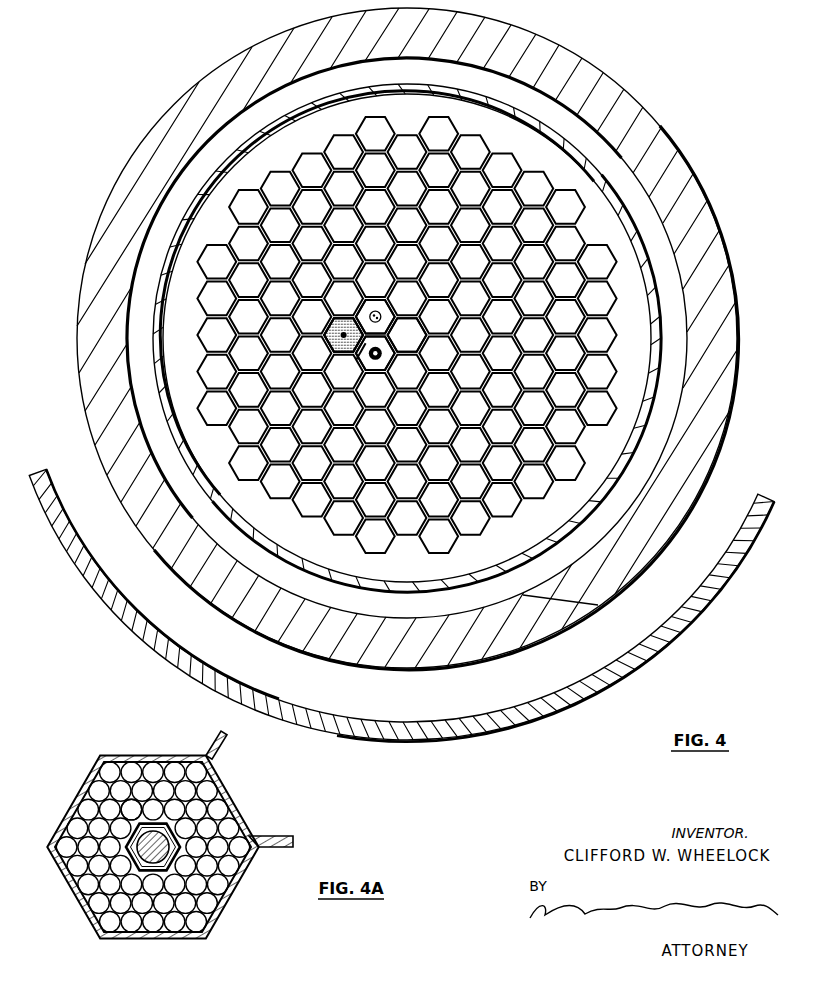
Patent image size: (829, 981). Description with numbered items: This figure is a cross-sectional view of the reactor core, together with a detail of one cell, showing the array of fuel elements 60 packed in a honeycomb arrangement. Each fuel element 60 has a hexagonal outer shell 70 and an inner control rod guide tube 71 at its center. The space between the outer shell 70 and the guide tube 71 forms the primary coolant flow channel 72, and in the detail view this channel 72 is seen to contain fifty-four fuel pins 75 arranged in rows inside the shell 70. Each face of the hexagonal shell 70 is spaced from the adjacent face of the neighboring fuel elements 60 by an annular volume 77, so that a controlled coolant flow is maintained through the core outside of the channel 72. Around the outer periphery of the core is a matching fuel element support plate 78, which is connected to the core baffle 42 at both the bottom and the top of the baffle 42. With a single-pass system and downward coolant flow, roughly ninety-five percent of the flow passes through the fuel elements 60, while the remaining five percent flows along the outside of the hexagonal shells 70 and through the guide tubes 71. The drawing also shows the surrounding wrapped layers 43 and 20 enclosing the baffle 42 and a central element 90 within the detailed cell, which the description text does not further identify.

In FIG. 4, the spirally wound sheet 20 is at (481, 750).
In FIG. 4, the core baffle 42 is at (192, 472).
In FIG. 4, the insulating layer 43 is at (525, 42).
In FIG. 4, the fuel elements 60 is at (406, 335).
In FIG. 4, the hexagonal outer shell 70 is at (407, 335).
In FIG. 4A, the hexagonal outer shell 70 is at (92, 911).
In FIG. 4, the control rod guide tube 71 is at (376, 311).
In FIG. 4A, the control rod guide tube 71 is at (130, 806).
In FIG. 4, the primary coolant flow channel 72 is at (375, 368).
In FIG. 4, the fuel pins 75 is at (333, 344).
In FIG. 4A, the fuel pins 75 is at (210, 790).
In FIG. 4, the annular volume 77 is at (365, 362).
In FIG. 4A, the annular volume 77 is at (215, 752).
In FIG. 4, the fuel element support plate 78 is at (358, 351).
In FIG. 4, the central element 90 is at (343, 333).
In FIG. 4A, the central element 90 is at (124, 829).